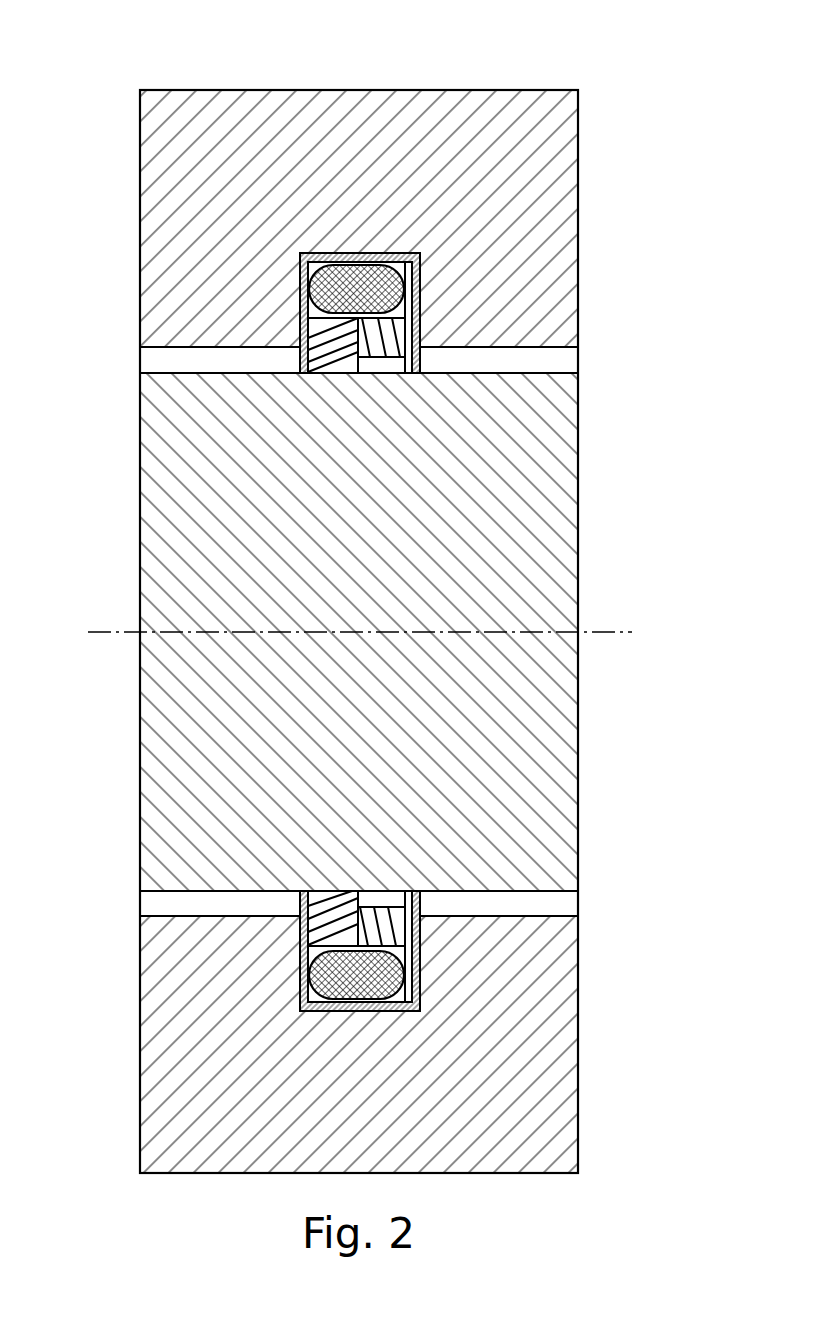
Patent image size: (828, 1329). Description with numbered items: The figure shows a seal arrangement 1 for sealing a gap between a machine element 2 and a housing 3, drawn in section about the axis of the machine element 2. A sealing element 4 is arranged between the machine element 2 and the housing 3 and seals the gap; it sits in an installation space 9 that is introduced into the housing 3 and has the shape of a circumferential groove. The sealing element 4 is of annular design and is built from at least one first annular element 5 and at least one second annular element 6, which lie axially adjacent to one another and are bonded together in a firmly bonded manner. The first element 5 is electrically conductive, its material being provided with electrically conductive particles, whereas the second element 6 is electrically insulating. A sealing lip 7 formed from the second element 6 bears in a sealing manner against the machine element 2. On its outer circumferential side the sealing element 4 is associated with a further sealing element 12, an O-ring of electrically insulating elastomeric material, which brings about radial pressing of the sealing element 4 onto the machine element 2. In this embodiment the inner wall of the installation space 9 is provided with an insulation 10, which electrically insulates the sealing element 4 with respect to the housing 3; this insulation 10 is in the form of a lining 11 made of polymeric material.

The seal arrangement 1 is at (621, 85).
The machine element 2 is at (553, 547).
The housing 3 is at (527, 100).
The sealing element 4 is at (361, 374).
The first annular element 5 is at (388, 328).
The second annular element 6 is at (347, 372).
The sealing lip 7 is at (360, 373).
The installation space 9 is at (421, 272).
The insulation 10 is at (306, 307).
The lining 11 is at (300, 253).
The further sealing element 12 is at (360, 277).